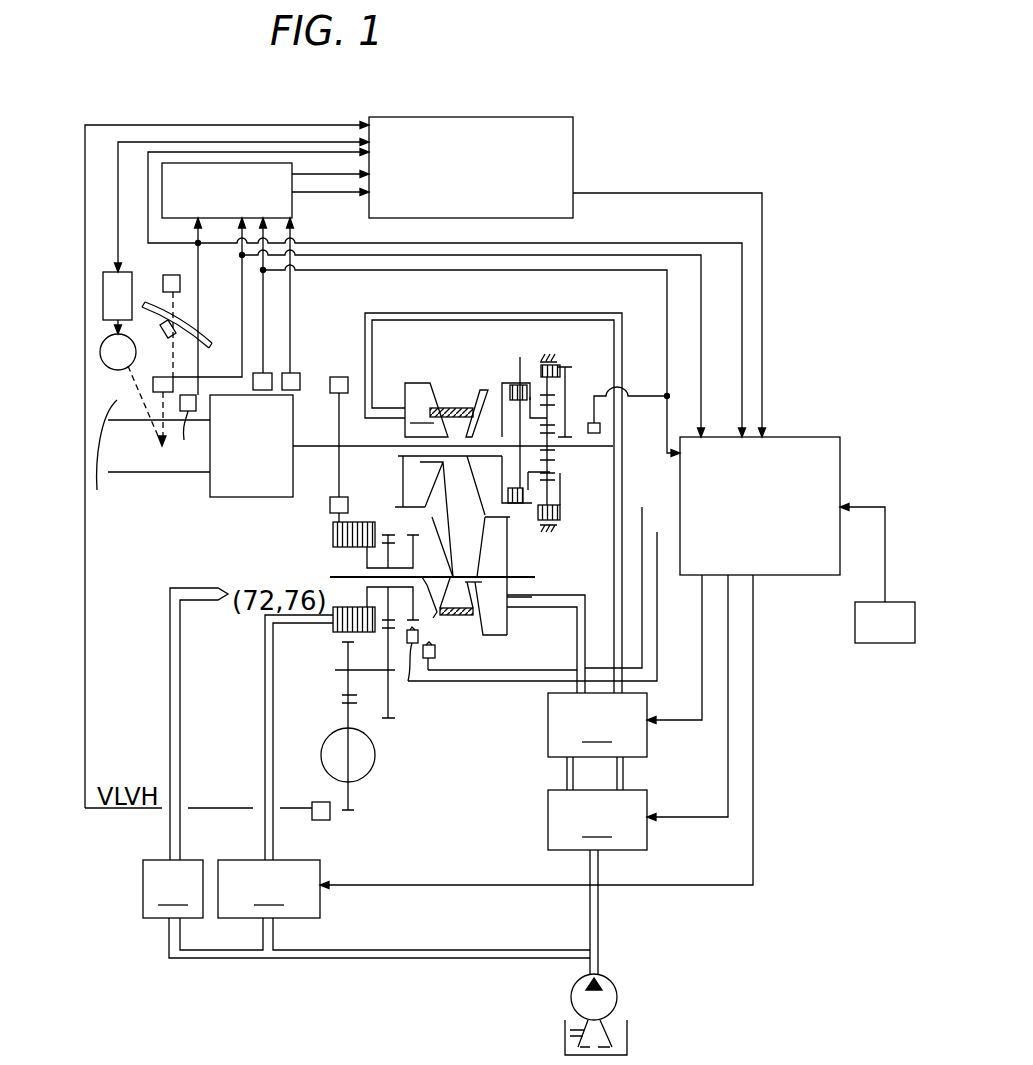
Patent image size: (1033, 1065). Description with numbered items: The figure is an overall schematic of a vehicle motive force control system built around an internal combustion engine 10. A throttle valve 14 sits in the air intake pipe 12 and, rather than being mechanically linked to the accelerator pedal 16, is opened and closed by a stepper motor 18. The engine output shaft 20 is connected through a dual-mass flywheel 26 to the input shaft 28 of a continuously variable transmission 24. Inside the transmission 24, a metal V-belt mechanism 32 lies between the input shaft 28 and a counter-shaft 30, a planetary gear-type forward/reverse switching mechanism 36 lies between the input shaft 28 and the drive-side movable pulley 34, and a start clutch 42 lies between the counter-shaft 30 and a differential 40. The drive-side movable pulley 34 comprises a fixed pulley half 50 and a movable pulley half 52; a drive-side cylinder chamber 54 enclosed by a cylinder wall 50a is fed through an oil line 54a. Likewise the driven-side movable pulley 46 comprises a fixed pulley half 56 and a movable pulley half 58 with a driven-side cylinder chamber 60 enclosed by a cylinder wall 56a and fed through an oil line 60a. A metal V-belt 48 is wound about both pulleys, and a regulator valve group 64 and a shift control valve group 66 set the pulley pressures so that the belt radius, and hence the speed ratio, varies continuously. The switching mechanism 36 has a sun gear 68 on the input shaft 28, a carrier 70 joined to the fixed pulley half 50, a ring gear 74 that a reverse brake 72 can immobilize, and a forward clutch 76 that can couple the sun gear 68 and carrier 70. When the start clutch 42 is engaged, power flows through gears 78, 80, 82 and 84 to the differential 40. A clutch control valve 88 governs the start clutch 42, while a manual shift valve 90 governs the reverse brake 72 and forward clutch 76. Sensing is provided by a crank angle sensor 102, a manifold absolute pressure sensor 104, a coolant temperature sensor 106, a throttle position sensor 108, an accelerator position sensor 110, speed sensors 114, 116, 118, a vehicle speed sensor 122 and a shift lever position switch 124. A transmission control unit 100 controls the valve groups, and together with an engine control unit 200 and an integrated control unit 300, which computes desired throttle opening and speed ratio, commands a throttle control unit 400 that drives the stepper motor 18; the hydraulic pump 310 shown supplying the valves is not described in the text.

The internal combustion engine 10 is at (220, 497).
The air intake pipe 12 is at (128, 473).
The throttle valve 14 is at (165, 456).
The accelerator pedal 16 is at (178, 340).
The stepper motor 18 is at (103, 366).
The output shaft 20 is at (315, 447).
The continuously variable transmission 24 is at (540, 306).
The dual-mass flywheel 26 is at (340, 377).
The input shaft 28 is at (380, 447).
The counter-shaft 30 is at (447, 612).
The metal V-belt mechanism 32 is at (518, 537).
The drive-side movable pulley 34 is at (434, 372).
The planetary gear-type forward/reverse switching mechanism 36 is at (590, 352).
The differential 40 is at (372, 772).
The start clutch 42 is at (350, 522).
The driven-side movable pulley 46 is at (528, 637).
The metal V-belt 48 is at (472, 512).
The fixed pulley half 50 is at (478, 390).
The cylinder wall 50a is at (405, 430).
The movable pulley half 52 is at (410, 383).
The drive-side cylinder chamber 54 is at (426, 410).
The oil line 54a is at (437, 313).
The fixed pulley half 56 is at (445, 562).
The cylinder wall 56a is at (496, 644).
The movable pulley half 58 is at (470, 626).
The driven-side cylinder chamber 60 is at (500, 568).
The oil line 60a is at (580, 597).
The regulator valve group 64 is at (597, 820).
The shift control valve group 66 is at (597, 725).
The sun gear 68 is at (553, 447).
The carrier 70 is at (552, 472).
The reverse brake 72 is at (562, 370).
The ring gear 74 is at (560, 515).
The forward clutch 76 is at (515, 412).
The gear 78 is at (387, 537).
The gear 80 is at (390, 720).
The gear 82 is at (345, 645).
The gear 84 is at (350, 812).
The clutch control valve 88 is at (269, 889).
The manual shift valve 90 is at (173, 889).
The transmission control unit 100 is at (805, 437).
The crank angle sensor 102 is at (266, 373).
The manifold absolute pressure sensor 104 is at (191, 436).
The coolant temperature sensor 106 is at (292, 373).
The throttle position sensor 108 is at (173, 385).
The accelerator position sensor 110 is at (180, 283).
The speed sensor 114 is at (600, 428).
The speed sensor 116 is at (440, 672).
The speed sensor 118 is at (420, 677).
The vehicle speed sensor 122 is at (312, 818).
The shift lever position switch 124 is at (855, 632).
The engine control unit 200 is at (292, 200).
The integrated control unit 300 is at (575, 153).
The oil pump 310 is at (615, 995).
The throttle control unit 400 is at (103, 292).